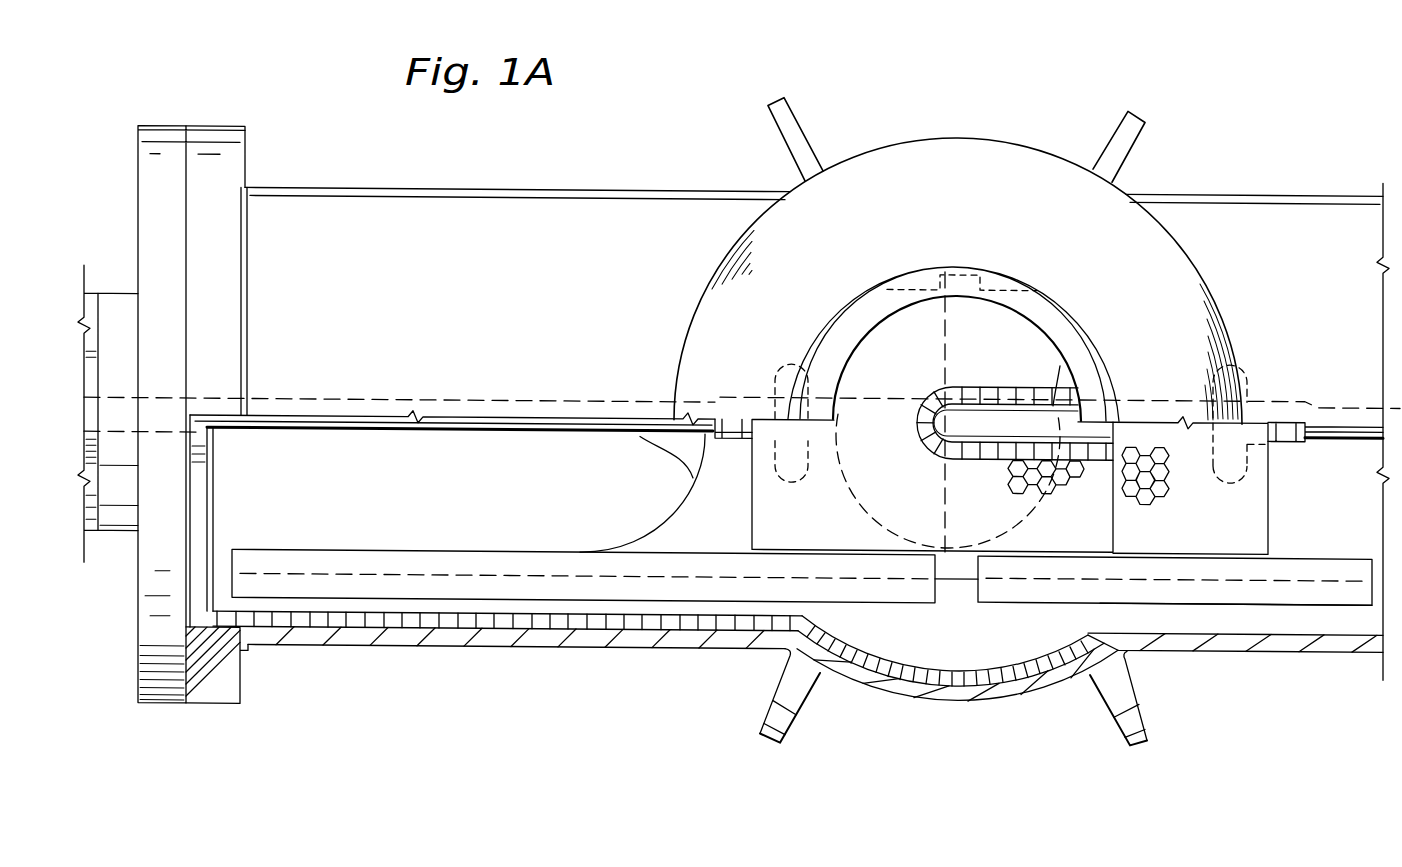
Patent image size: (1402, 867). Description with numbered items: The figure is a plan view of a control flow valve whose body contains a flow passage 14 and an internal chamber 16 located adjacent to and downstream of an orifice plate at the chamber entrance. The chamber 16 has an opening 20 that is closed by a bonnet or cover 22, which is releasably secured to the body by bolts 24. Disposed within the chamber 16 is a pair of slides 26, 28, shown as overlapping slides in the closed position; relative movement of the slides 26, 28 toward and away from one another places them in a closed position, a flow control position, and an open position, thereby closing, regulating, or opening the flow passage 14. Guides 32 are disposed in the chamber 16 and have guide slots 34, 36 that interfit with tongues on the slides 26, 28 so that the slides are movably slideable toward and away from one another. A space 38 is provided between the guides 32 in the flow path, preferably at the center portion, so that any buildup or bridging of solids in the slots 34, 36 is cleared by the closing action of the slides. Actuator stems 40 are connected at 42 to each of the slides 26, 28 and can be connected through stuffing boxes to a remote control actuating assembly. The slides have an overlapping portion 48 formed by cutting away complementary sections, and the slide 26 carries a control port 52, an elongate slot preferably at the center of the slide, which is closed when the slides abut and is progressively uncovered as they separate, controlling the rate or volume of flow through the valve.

The flow passage 14 is at (912, 362).
The internal chamber 16 is at (469, 190).
The opening 20 is at (336, 631).
The bonnet or cover 22 is at (153, 128).
The bolts 24 is at (212, 129).
The slide 26 is at (1086, 535).
The slide 28 is at (1201, 539).
The guides 32 is at (1280, 601).
The guide slot 34 is at (673, 572).
The guide slot 36 is at (1328, 572).
The space 38 is at (958, 590).
The actuator stems 40 is at (480, 437).
The connection 42 is at (788, 481).
The overlapping portion 48 is at (1090, 468).
The control port 52 is at (1032, 430).